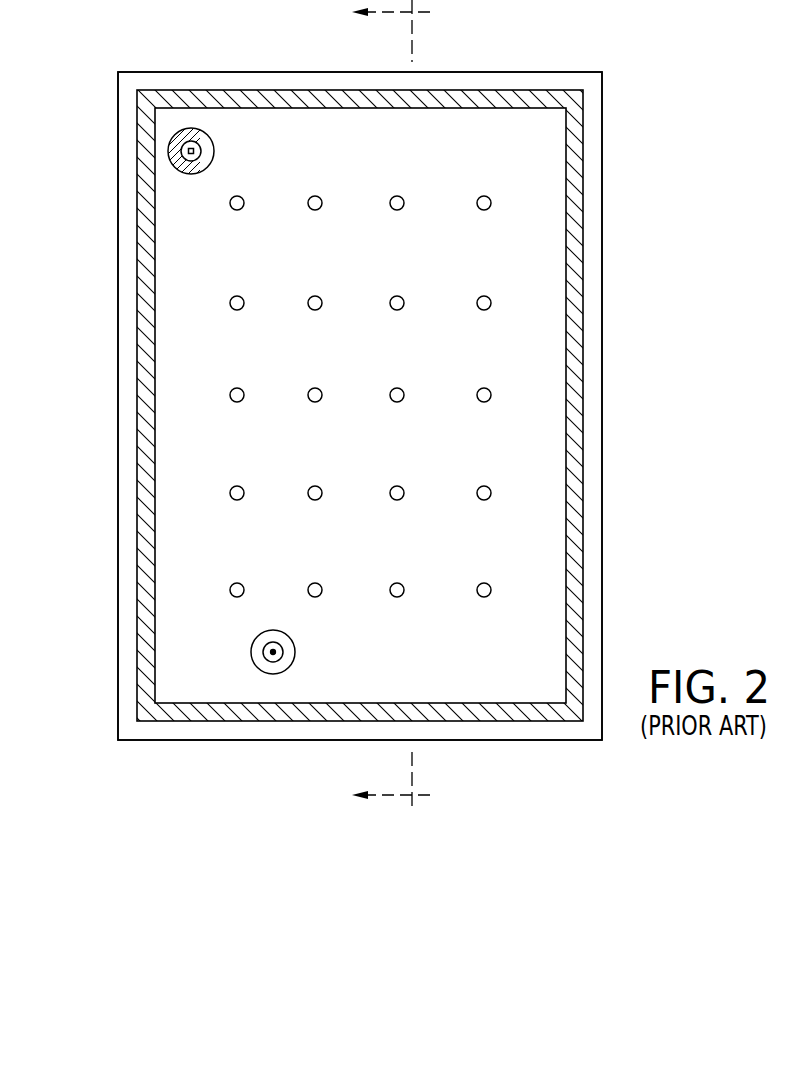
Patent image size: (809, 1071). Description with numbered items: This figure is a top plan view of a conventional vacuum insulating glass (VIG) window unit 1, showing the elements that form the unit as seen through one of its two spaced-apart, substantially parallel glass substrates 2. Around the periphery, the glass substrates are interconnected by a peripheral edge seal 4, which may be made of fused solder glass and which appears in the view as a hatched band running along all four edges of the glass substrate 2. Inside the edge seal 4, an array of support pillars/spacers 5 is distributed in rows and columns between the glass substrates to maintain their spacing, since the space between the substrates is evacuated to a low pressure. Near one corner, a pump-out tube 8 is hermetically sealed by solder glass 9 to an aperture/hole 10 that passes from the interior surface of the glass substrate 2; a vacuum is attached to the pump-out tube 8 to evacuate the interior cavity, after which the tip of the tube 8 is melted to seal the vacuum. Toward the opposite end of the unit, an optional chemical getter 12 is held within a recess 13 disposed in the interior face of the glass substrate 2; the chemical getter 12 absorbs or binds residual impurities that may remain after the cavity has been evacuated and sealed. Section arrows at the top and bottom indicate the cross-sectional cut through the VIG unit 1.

The VIG window unit 1 is at (104, 613).
The glass substrate 2 is at (356, 84).
The peripheral edge seal 4 is at (258, 95).
The support pillars/spacers 5 is at (492, 302).
The pump-out tube 8 is at (169, 146).
The solder glass 9 is at (191, 176).
The aperture/hole 10 is at (188, 152).
The chemical getter 12 is at (270, 656).
The recess 13 is at (295, 652).